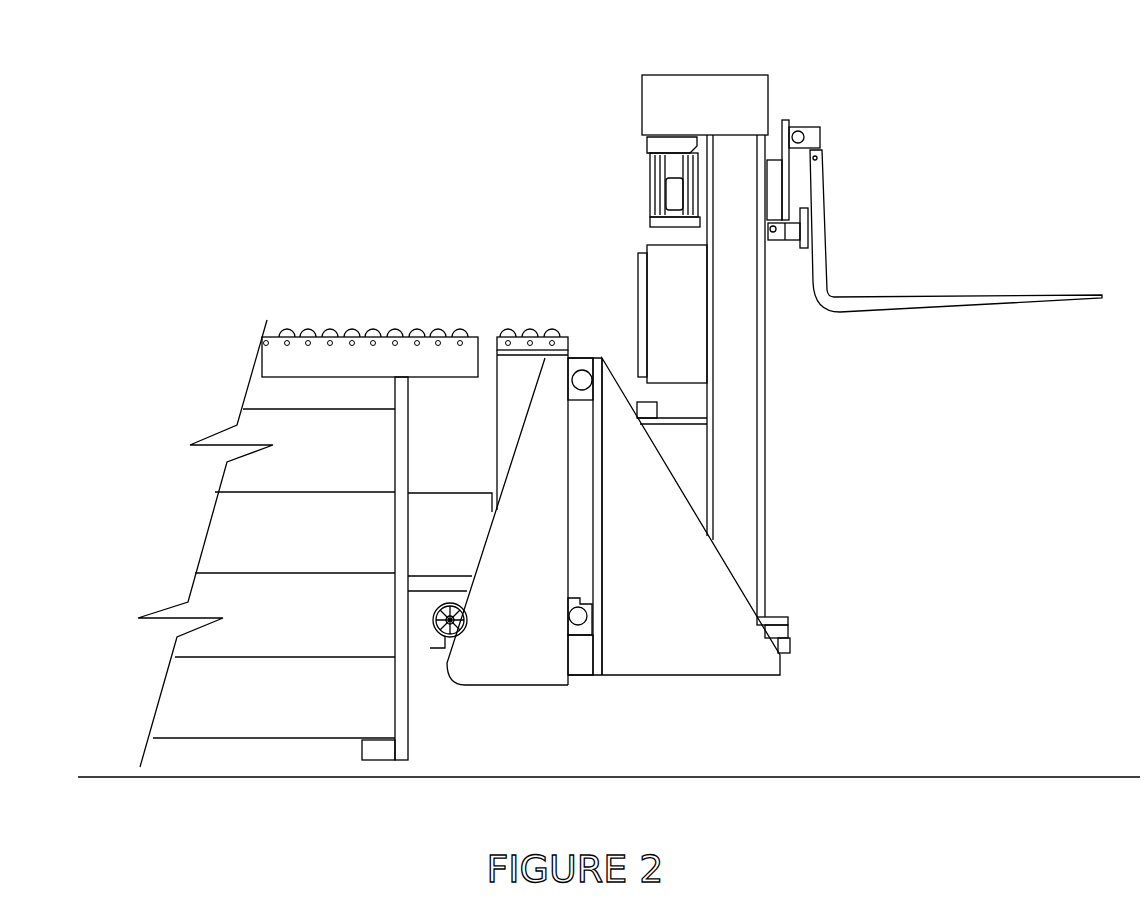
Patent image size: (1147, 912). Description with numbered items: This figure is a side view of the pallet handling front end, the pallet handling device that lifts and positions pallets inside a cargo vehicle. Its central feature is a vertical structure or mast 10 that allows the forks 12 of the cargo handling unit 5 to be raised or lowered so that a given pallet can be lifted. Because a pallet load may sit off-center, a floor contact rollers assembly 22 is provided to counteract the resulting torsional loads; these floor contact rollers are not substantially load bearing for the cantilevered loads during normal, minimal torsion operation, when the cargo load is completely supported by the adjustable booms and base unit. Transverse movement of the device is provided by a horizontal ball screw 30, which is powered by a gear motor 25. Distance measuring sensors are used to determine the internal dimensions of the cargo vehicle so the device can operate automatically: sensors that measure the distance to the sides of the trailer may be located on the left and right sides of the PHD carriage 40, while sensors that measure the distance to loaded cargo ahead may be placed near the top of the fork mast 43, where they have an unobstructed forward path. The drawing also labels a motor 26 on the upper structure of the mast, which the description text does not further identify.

The cargo handling unit 5 is at (773, 193).
The mast 10 is at (663, 300).
The forks 12 is at (912, 303).
The floor contact rollers assembly 22 is at (453, 690).
The gear motor 25 is at (447, 622).
The motor 26 is at (668, 175).
The horizontal ball screw 30 is at (580, 618).
The PHD carriage 40 is at (712, 637).
The fork mast top 43 is at (683, 95).